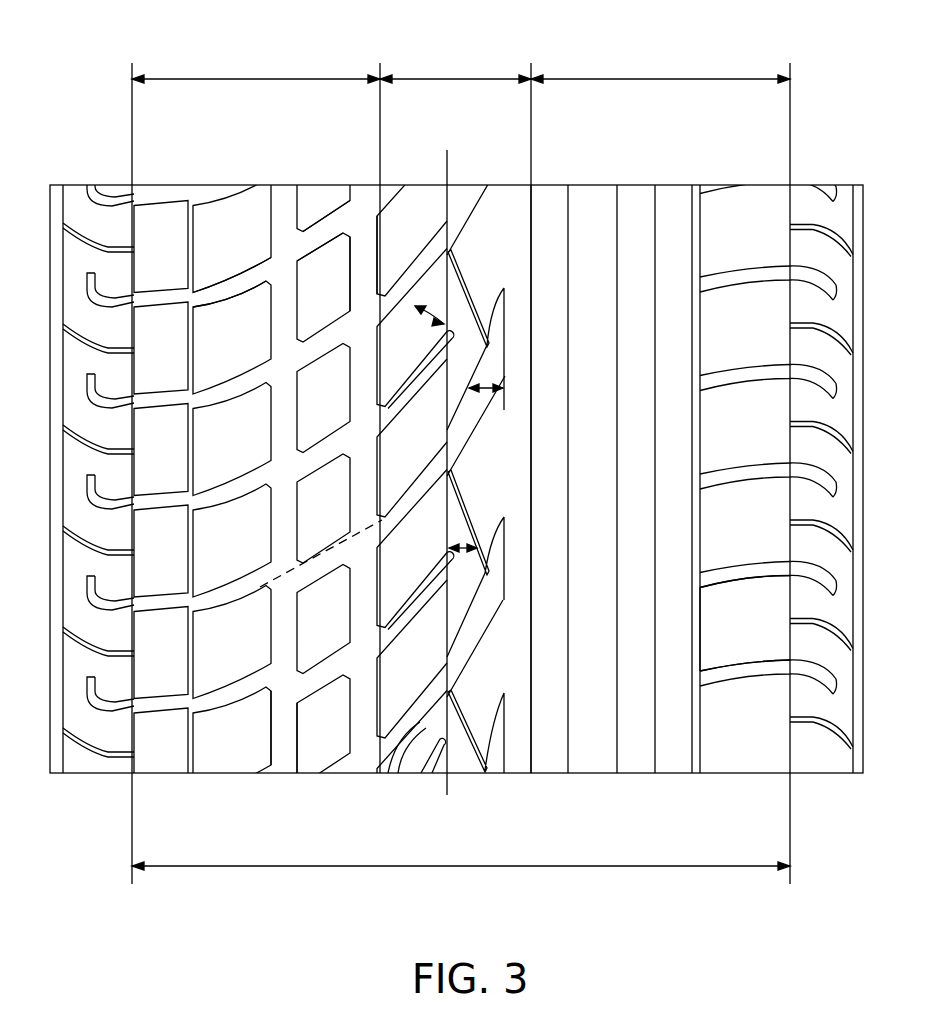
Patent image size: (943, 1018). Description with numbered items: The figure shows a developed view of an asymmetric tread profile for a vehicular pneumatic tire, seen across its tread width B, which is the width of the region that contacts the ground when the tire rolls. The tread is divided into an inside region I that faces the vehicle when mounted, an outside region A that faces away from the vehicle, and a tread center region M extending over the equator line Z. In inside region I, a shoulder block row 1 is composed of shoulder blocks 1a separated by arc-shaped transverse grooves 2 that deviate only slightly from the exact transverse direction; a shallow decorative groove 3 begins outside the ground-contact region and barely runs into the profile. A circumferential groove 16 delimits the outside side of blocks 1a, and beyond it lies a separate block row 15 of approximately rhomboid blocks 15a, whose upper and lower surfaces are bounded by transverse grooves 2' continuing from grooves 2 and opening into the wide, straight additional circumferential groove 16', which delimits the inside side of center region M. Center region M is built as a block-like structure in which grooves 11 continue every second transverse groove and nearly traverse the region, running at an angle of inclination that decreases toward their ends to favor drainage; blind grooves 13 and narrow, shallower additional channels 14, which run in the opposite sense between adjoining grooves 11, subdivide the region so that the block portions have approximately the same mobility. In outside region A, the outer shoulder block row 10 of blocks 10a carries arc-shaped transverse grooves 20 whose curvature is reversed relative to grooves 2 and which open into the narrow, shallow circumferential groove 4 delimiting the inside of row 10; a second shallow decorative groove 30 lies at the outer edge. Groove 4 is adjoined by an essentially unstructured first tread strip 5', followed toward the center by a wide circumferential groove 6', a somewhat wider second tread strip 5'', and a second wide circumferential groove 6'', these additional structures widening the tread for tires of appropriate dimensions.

The inside shoulder block row 1 is at (177, 182).
The inside shoulder blocks 1a is at (225, 218).
The transverse grooves 2 is at (232, 260).
The transverse grooves 2' is at (323, 203).
The groove 3 is at (100, 238).
The circumferential groove 4 is at (697, 200).
The first tread strip 5' is at (662, 460).
The second tread strip 5'' is at (582, 460).
The wide circumferential groove 6' is at (625, 460).
The second wide circumferential groove 6'' is at (543, 460).
The outer shoulder block row 10 is at (768, 511).
The outer shoulder blocks 10a is at (735, 640).
The transverse grooves 11 is at (403, 770).
The blind grooves 13 is at (403, 617).
The additional channels 14 is at (487, 577).
The block row 15 is at (319, 489).
The rhomboid blocks 15a is at (308, 650).
The circumferential groove 16 is at (279, 757).
The additional wide circumferential groove 16' is at (357, 228).
The transverse grooves 20 is at (747, 672).
The groove 30 is at (828, 228).
The inside region I is at (258, 78).
The tread center region M is at (448, 78).
The outside region A is at (655, 78).
The tread width B is at (473, 867).
The equator line Z is at (447, 167).